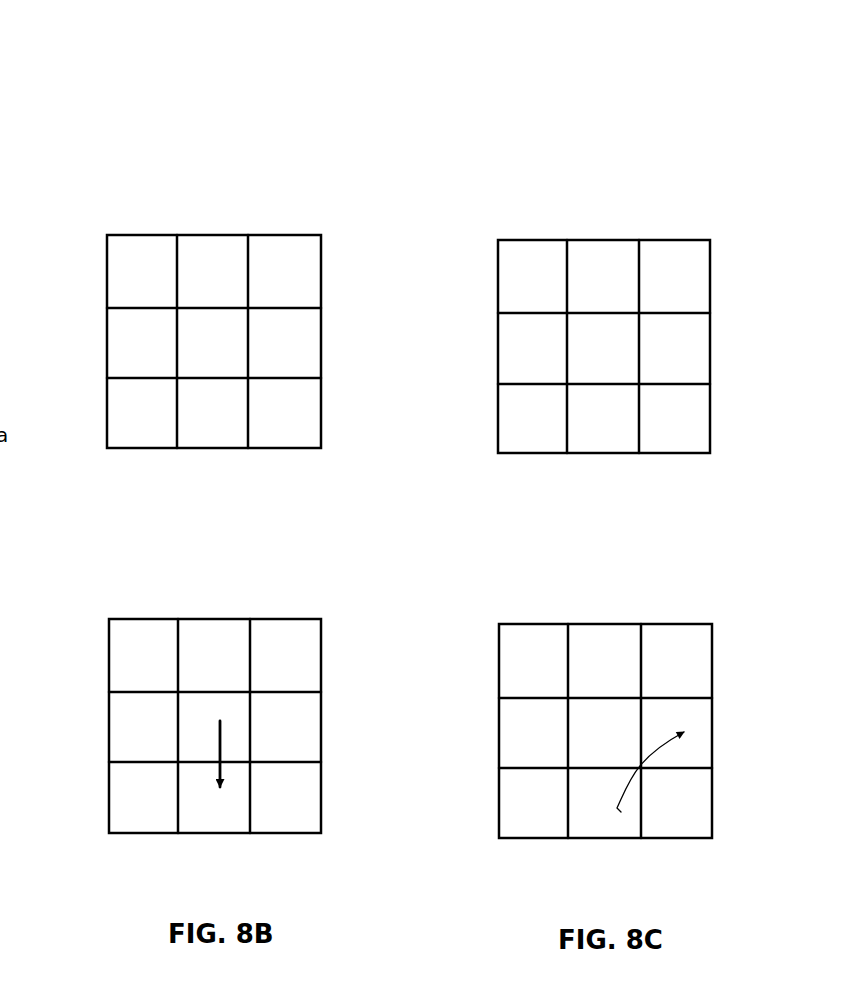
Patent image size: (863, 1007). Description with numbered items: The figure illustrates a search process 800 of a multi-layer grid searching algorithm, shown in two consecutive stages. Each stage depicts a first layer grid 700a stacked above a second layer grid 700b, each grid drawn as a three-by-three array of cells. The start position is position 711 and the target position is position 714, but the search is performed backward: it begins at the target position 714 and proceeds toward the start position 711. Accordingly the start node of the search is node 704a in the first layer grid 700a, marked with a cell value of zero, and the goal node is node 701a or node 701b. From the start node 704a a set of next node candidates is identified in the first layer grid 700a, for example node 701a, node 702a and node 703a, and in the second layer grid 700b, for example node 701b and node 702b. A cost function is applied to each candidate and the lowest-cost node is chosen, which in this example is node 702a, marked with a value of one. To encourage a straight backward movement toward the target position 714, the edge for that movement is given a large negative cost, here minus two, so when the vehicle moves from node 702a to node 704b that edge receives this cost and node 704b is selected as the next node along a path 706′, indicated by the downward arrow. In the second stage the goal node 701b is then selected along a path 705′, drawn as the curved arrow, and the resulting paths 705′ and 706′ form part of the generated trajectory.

In FIG. 8C, the cellular automaton update process 800 is at (654, 38).
In FIG. 8B, the first layer grid 700a is at (137, 203).
In FIG. 8C, the first layer grid 700a is at (526, 208).
In FIG. 8B, the second layer grid 700b is at (138, 588).
In FIG. 8C, the second layer grid 700b is at (528, 593).
In FIG. 8B, the goal node 701a is at (298, 348).
In FIG. 8C, the goal node 701a is at (687, 353).
In FIG. 8B, the goal node 701b is at (298, 733).
In FIG. 8C, the goal node 701b is at (688, 738).
In FIG. 8B, the node 702a is at (185, 350).
In FIG. 8C, the node 702a is at (573, 353).
In FIG. 8B, the node 702b is at (210, 712).
In FIG. 8C, the node 702b is at (608, 742).
In FIG. 8B, the node 703a is at (308, 415).
In FIG. 8B, the start node 704a is at (213, 425).
In FIG. 8C, the start node 704a is at (603, 428).
In FIG. 8B, the node 704b is at (213, 812).
In FIG. 8C, the node 704b is at (603, 818).
In FIG. 8C, the path 705′ is at (640, 763).
In FIG. 8B, the path 706′ is at (222, 737).
In FIG. 8B, the start position 711 is at (298, 733).
In FIG. 8B, the target position 714 is at (177, 868).
In FIG. 8C, the target position 714 is at (568, 873).